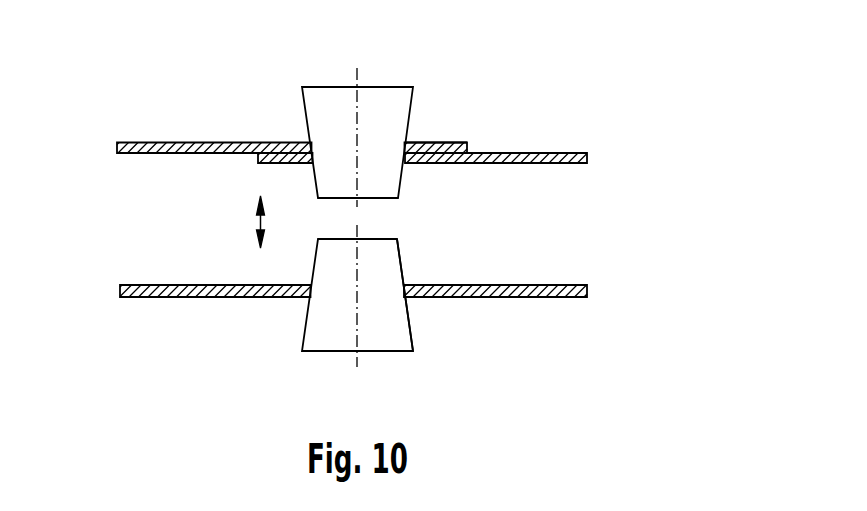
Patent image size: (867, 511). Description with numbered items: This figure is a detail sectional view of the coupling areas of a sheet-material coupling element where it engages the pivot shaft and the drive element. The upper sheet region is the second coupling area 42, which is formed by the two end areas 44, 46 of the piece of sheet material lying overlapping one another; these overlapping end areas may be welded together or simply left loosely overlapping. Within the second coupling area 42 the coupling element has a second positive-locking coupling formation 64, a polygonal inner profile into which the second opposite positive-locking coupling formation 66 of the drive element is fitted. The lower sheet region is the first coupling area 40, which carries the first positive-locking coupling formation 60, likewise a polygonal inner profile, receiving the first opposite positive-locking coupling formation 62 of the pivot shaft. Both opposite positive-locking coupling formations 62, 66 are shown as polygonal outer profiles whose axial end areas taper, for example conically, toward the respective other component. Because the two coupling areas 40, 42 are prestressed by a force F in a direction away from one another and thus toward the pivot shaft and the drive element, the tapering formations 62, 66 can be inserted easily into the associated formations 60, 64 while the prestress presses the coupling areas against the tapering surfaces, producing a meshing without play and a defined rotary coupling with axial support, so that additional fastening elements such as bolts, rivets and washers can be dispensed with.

The first coupling area 40 is at (256, 297).
The second coupling area 42 is at (283, 118).
The end area 44 is at (266, 143).
The end area 46 is at (442, 142).
The first positive-locking coupling formation 60 is at (408, 282).
The first opposite positive-locking coupling formation 62 is at (410, 325).
The second positive-locking coupling formation 64 is at (311, 161).
The second opposite positive-locking coupling formation 66 is at (413, 97).
The force F is at (258, 222).